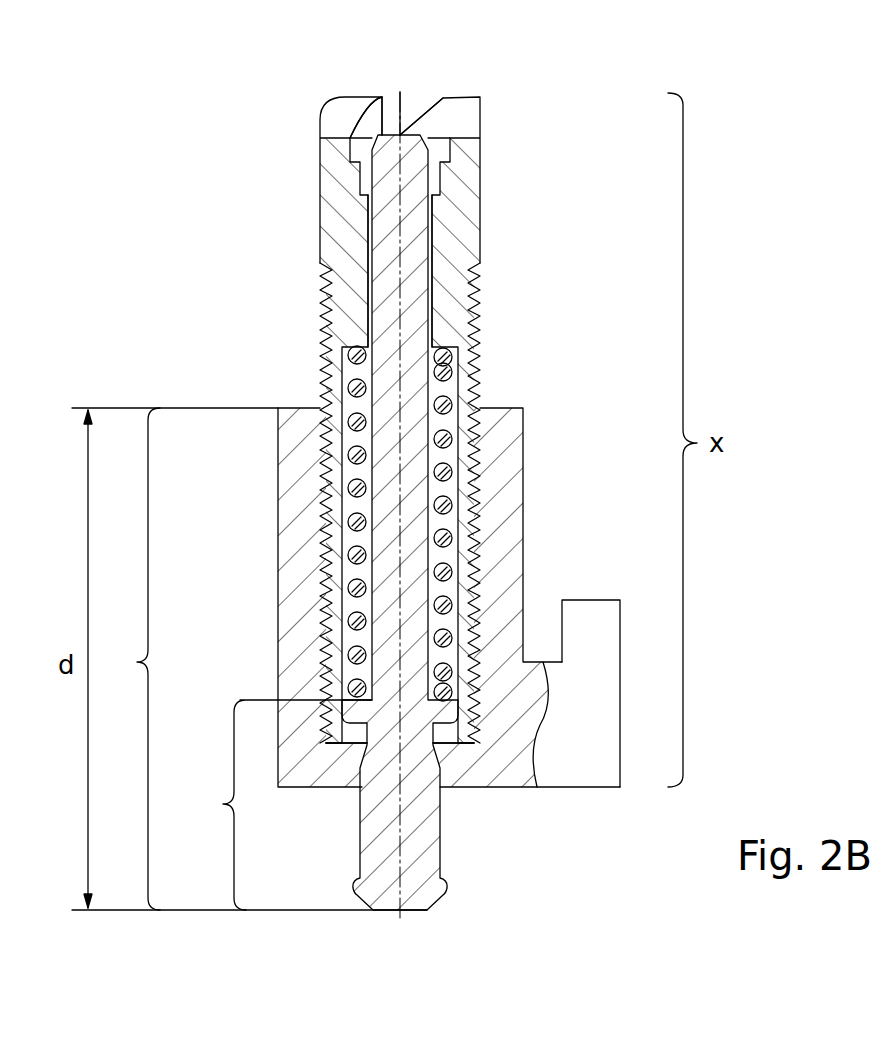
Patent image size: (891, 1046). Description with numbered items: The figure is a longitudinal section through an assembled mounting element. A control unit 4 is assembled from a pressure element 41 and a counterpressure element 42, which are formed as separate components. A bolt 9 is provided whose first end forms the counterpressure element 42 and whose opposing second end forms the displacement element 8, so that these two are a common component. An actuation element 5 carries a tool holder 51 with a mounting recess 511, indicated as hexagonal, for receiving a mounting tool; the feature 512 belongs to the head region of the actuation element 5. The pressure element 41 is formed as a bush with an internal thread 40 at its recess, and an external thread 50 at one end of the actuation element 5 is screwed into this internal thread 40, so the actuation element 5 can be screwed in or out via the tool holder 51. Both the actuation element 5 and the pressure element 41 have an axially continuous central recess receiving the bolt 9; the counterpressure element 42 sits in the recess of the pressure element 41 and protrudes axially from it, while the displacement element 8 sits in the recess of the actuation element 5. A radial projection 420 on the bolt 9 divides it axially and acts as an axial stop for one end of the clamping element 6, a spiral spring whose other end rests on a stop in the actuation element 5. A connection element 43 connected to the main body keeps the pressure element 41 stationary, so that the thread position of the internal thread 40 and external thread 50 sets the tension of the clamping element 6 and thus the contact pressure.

The control unit 4 is at (137, 659).
The internal thread 40 is at (477, 730).
The pressure element 41 is at (503, 505).
The counterpressure element 42 is at (277, 805).
The radial projection 420 is at (480, 737).
The connection element 43 is at (590, 640).
The actuation element 5 is at (497, 160).
The external thread 50 is at (322, 353).
The tool holder 51 is at (417, 103).
The mounting recess 511 is at (435, 173).
The curved cam surface 512 is at (347, 118).
The clamping element 6 is at (448, 370).
The displacement element 8 is at (398, 230).
The bolt 9 is at (412, 317).